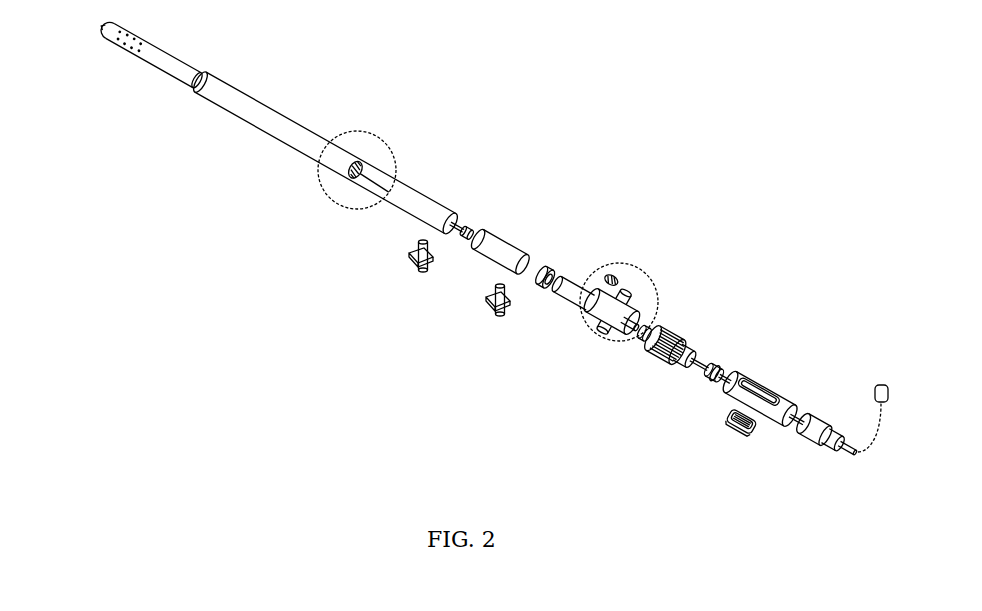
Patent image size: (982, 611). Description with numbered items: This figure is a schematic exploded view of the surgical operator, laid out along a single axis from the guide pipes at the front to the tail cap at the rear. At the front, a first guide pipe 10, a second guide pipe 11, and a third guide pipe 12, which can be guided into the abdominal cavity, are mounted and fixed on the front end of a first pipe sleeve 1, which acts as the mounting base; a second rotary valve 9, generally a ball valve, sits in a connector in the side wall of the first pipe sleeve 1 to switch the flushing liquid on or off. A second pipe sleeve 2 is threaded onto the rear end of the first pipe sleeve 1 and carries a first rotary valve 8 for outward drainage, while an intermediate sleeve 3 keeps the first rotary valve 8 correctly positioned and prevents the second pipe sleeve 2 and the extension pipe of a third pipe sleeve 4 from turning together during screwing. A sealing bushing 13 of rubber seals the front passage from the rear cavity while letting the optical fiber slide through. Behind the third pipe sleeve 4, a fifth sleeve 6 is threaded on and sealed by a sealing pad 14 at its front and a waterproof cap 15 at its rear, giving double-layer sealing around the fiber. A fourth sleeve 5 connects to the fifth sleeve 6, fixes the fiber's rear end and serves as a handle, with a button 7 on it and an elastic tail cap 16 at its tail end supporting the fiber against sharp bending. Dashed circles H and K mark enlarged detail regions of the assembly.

The first pipe sleeve 1 is at (422, 199).
The second pipe sleeve 2 is at (493, 241).
The intermediate sleeve 3 is at (548, 262).
The third pipe sleeve 4 is at (608, 292).
The fourth sleeve 5 is at (765, 382).
The fifth sleeve 6 is at (668, 340).
The button 7 is at (740, 433).
The first rotary valve 8 is at (497, 308).
The second rotary valve 9 is at (420, 268).
The first guide pipe 10 is at (148, 55).
The second guide pipe 11 is at (107, 32).
The third guide pipe 12 is at (103, 30).
The sealing bushing 13 is at (467, 238).
The sealing pad 14 is at (637, 335).
The waterproof cap 15 is at (705, 380).
The tail cap 16 is at (816, 440).
The detail circle H is at (388, 145).
The detail circle K is at (587, 330).